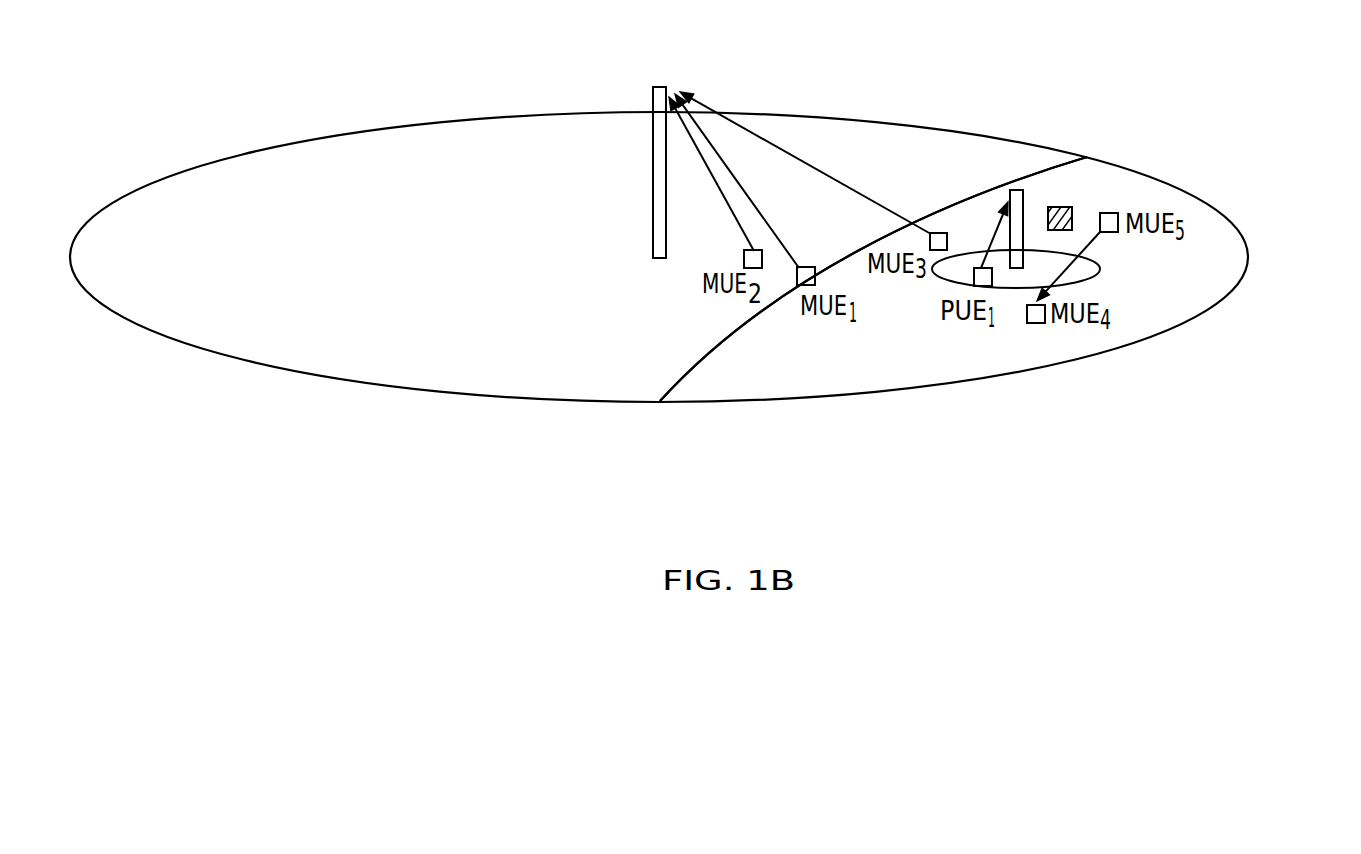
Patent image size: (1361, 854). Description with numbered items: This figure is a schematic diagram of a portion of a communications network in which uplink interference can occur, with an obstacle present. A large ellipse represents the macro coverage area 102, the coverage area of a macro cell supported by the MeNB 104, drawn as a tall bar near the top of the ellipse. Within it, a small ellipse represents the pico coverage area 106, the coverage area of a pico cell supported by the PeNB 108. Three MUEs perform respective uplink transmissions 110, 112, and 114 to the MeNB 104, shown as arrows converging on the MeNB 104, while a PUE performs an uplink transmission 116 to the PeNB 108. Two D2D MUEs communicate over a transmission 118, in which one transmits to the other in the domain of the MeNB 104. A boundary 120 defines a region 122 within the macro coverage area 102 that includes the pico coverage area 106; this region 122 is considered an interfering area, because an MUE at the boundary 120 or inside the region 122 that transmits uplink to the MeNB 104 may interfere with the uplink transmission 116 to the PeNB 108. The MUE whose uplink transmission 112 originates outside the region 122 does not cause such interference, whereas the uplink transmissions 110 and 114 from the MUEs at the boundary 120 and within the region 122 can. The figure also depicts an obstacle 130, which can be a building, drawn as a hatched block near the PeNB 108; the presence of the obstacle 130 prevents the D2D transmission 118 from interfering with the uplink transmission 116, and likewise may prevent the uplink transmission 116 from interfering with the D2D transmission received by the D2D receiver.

The macro coverage area 102 is at (457, 397).
The MeNB 104 is at (653, 185).
The pico coverage area 106 is at (1035, 252).
The PeNB 108 is at (1058, 206).
The uplink transmission 110 is at (745, 184).
The uplink transmission 112 is at (717, 174).
The uplink transmission 114 is at (812, 164).
The uplink transmission 116 is at (992, 240).
The transmission 118 is at (1074, 264).
The boundary 120 is at (702, 358).
The region 122 is at (785, 385).
The obstacle 130 is at (1024, 226).